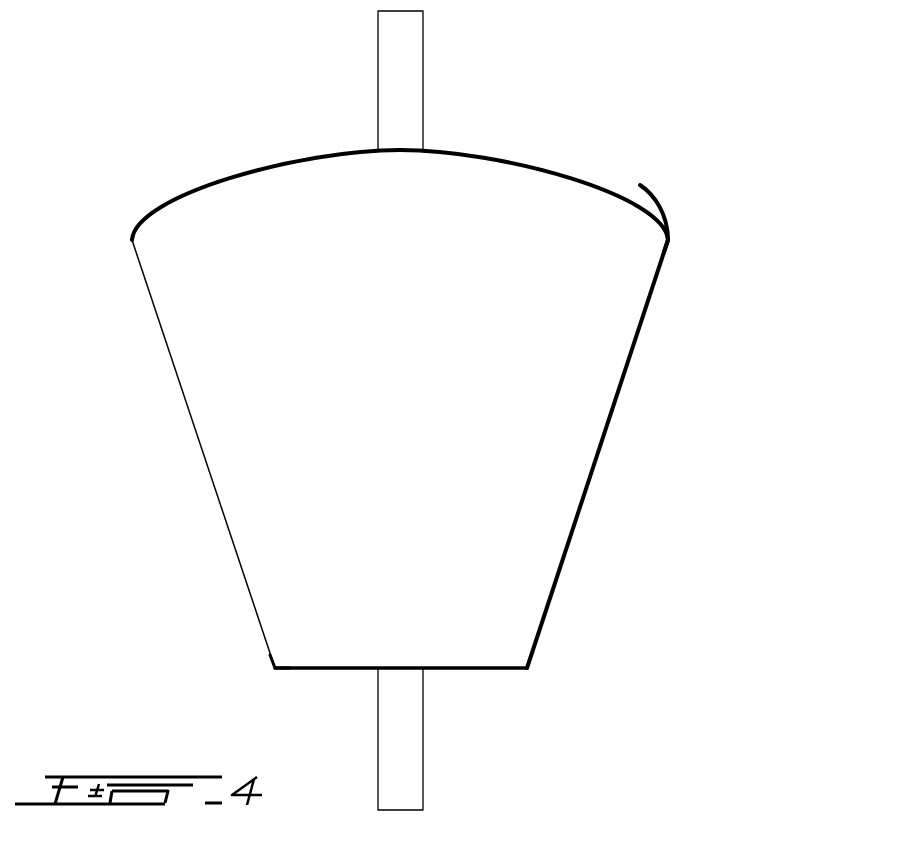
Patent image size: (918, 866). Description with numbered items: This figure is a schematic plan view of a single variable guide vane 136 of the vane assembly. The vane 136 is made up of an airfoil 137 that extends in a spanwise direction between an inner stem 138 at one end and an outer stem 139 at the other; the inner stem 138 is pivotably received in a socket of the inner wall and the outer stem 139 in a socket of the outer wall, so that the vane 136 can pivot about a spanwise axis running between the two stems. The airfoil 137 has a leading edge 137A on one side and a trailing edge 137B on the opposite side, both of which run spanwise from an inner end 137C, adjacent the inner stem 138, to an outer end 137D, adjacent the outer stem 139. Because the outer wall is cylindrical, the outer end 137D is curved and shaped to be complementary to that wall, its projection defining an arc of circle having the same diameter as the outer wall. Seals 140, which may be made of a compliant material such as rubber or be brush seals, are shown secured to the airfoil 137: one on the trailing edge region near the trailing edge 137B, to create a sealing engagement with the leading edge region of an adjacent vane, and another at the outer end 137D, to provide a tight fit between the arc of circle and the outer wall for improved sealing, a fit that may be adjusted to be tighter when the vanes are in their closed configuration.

The vane 136 is at (740, 342).
The airfoil 137 is at (422, 392).
The leading edge 137A is at (190, 413).
The trailing edge 137B is at (607, 428).
The inner end 137C is at (485, 670).
The outer end 137D is at (223, 168).
The inner stem 138 is at (423, 765).
The outer stem 139 is at (423, 83).
The seal 140 is at (610, 182).